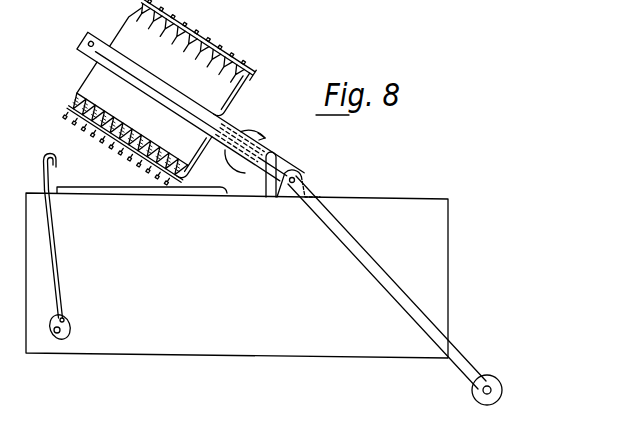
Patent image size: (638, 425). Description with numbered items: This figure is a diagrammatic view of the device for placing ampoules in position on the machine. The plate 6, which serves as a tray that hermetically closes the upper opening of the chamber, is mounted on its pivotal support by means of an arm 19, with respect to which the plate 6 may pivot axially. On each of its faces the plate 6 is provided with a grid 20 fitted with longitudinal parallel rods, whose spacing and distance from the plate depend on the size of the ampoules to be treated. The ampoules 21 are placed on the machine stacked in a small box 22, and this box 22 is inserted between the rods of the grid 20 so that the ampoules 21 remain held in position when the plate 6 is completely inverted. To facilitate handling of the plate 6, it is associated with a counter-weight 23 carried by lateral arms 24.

The plate 6 is at (89, 56).
The arm 19 is at (282, 168).
The grid 20 is at (254, 76).
The ampoules 21 is at (210, 47).
The small box 22 is at (132, 42).
The counter-weight 23 is at (501, 388).
The lateral arms 24 is at (458, 358).